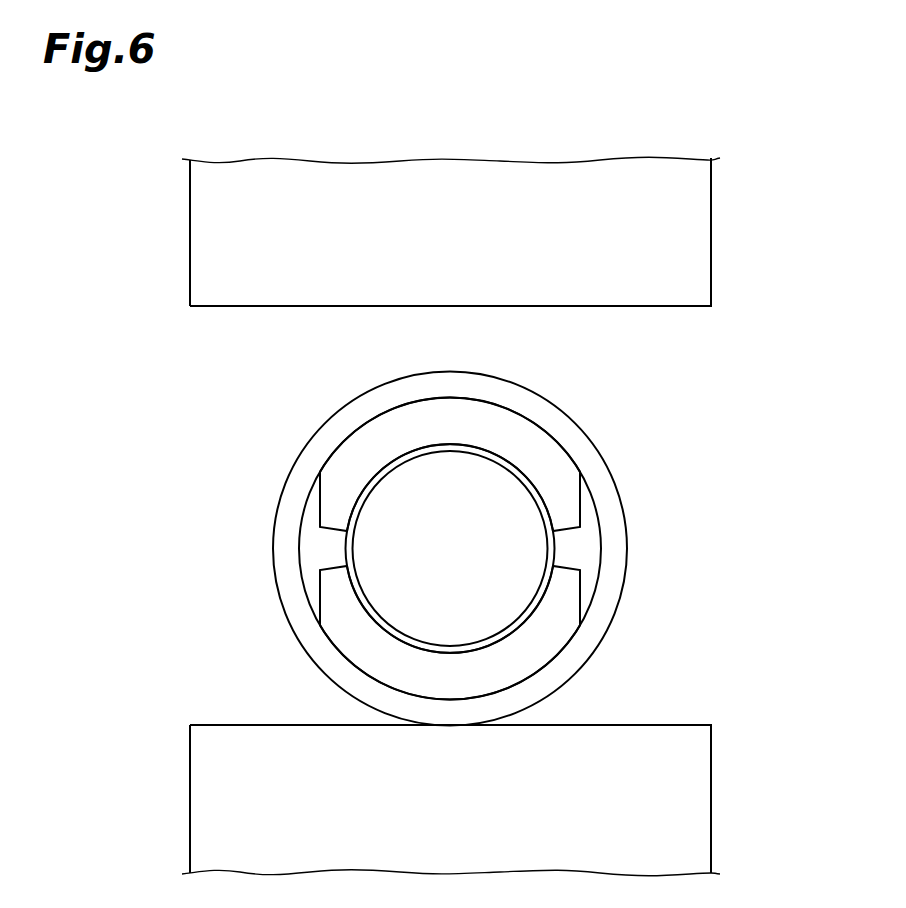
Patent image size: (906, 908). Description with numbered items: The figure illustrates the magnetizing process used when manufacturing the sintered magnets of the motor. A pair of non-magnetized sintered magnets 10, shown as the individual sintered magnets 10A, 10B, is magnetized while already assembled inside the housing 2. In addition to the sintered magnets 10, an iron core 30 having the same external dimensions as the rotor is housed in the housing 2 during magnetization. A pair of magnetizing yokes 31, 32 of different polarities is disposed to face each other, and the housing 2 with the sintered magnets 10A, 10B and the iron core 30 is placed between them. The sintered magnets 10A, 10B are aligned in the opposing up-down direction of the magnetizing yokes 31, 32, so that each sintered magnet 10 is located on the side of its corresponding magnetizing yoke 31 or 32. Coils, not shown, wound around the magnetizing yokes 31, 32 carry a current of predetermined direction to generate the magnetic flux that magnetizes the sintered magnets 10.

The housing 2 is at (300, 456).
The sintered magnet 10 is at (537, 549).
The sintered magnet 10A is at (533, 450).
The sintered magnet 10B is at (533, 647).
The iron core 30 is at (520, 552).
The magnetizing yoke 31 is at (697, 800).
The magnetizing yoke 32 is at (697, 226).